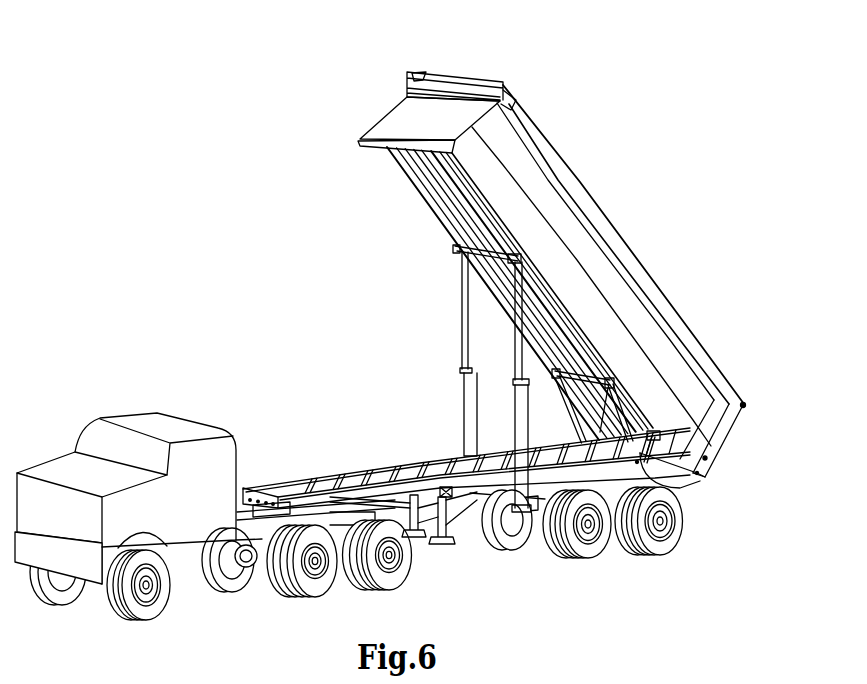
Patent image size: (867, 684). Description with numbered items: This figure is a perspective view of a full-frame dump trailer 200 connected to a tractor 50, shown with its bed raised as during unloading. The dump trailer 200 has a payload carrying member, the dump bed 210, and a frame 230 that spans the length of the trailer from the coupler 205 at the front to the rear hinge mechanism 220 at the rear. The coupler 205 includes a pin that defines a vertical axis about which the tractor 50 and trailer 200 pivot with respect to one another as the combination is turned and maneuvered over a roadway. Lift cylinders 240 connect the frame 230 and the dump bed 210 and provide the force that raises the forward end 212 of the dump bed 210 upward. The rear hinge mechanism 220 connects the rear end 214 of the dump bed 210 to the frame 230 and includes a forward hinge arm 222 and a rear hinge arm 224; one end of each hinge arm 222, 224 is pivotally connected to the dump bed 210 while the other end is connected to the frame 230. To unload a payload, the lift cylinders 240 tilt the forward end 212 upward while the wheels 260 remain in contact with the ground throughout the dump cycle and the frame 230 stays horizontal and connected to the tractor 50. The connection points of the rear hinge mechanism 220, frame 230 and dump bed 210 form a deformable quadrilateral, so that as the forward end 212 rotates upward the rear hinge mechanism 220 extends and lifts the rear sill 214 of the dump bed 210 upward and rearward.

The tractor 50 is at (112, 376).
The dump trailer 200 is at (330, 62).
The coupler 205 is at (298, 446).
The dump bed 210 is at (599, 240).
The forward end 212 is at (468, 78).
The rear end 214 is at (746, 403).
The rear hinge mechanism 220 is at (655, 398).
The forward hinge arm 222 is at (625, 387).
The rear hinge arm 224 is at (708, 457).
The frame 230 is at (469, 489).
The lift cylinders 240 is at (462, 330).
The wheels 260 is at (590, 556).